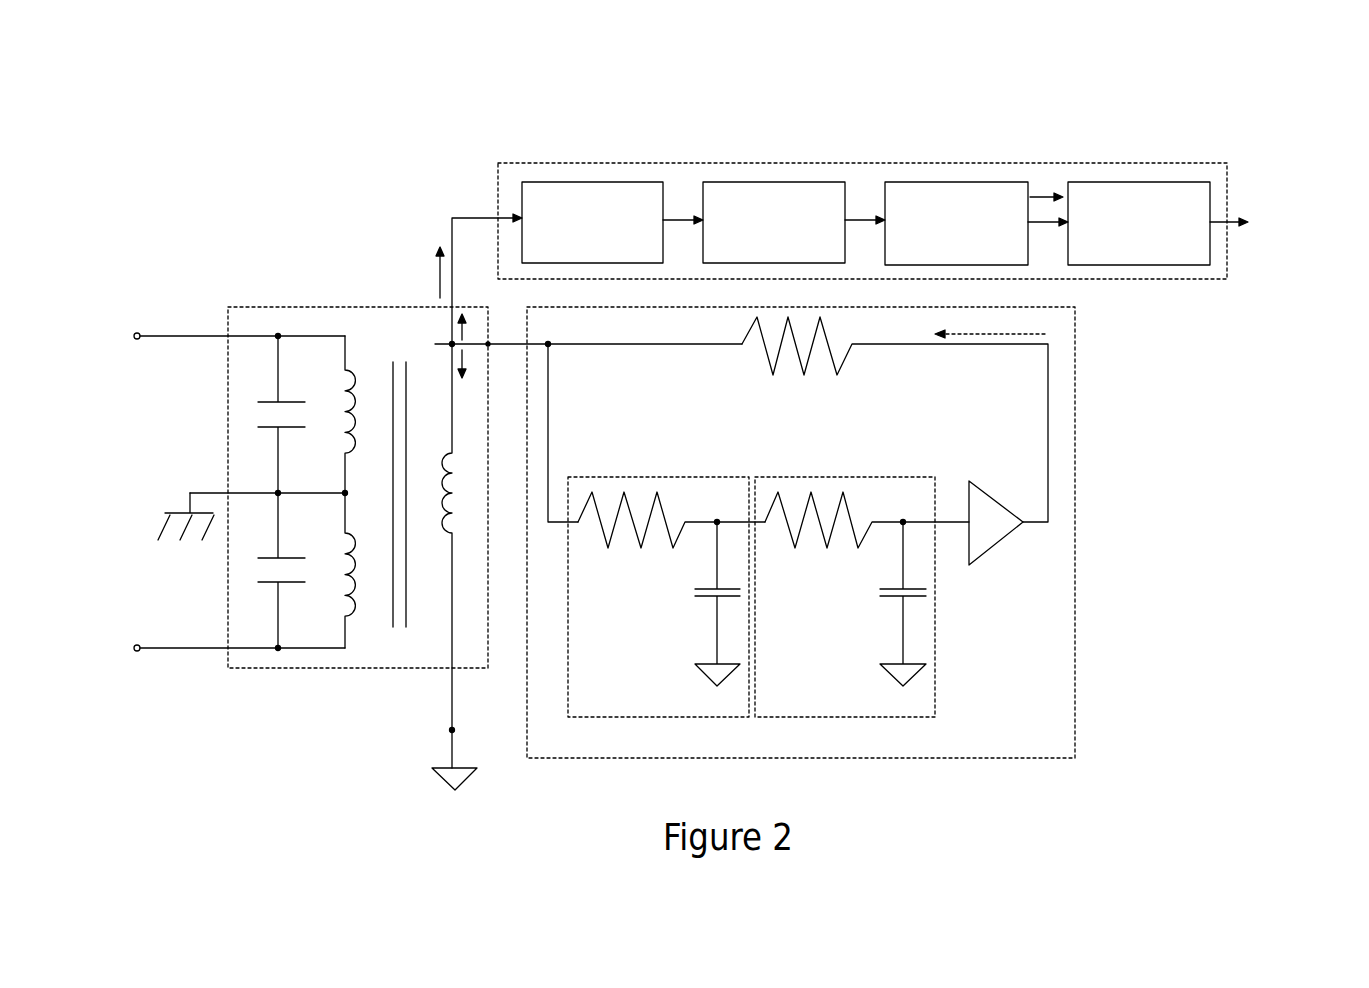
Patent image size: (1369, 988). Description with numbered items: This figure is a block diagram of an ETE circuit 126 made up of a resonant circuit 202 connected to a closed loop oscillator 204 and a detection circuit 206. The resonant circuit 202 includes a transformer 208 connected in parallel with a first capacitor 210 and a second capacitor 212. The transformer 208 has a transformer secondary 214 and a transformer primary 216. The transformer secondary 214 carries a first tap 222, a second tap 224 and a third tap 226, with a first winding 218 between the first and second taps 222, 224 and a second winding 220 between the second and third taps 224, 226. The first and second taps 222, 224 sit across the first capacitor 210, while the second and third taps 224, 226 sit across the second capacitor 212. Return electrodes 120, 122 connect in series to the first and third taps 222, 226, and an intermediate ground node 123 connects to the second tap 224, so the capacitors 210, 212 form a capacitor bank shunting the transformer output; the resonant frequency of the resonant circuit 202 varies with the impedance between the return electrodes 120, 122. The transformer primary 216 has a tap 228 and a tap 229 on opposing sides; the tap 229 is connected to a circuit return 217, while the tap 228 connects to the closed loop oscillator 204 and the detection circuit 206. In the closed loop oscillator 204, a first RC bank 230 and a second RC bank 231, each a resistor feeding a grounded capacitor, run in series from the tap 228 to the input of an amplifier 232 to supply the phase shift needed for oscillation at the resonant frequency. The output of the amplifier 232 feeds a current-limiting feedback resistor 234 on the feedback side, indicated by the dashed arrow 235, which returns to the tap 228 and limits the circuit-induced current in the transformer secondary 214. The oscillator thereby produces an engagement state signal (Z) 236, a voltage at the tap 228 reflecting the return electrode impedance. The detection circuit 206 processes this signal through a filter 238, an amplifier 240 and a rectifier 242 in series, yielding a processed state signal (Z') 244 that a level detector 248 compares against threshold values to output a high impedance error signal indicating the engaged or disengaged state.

The return electrode 120 is at (139, 334).
The return electrode 122 is at (139, 646).
The intermediate ground node 123 is at (176, 513).
The ETE circuit 126 is at (929, 200).
The resonant circuit 202 is at (282, 668).
The closed loop oscillator 204 is at (1060, 308).
The detection circuit 206 is at (1209, 280).
The transformer 208 is at (419, 508).
The first capacitor 210 is at (263, 402).
The second capacitor 212 is at (263, 558).
The transformer secondary 214 is at (391, 520).
The transformer primary 216 is at (453, 500).
The circuit return 217 is at (462, 785).
The first winding 218 is at (351, 378).
The second winding 220 is at (351, 541).
The first tap 222 is at (278, 334).
The second tap 224 is at (278, 491).
The third tap 226 is at (278, 647).
The tap 228 is at (436, 344).
The tap 229 is at (452, 731).
The first RC bank 230 is at (703, 478).
The second RC bank 231 is at (889, 478).
The amplifier 232 is at (996, 544).
The current-limiting feedback resistor 234 is at (826, 329).
The dashed arrow 235 is at (1004, 334).
The engagement state signal (Z) 236 is at (422, 279).
The filter 238 is at (538, 182).
The amplifier 240 is at (724, 182).
The rectifier 242 is at (905, 182).
The processed state signal (Z') 244 is at (1058, 178).
The level detector 248 is at (1085, 182).